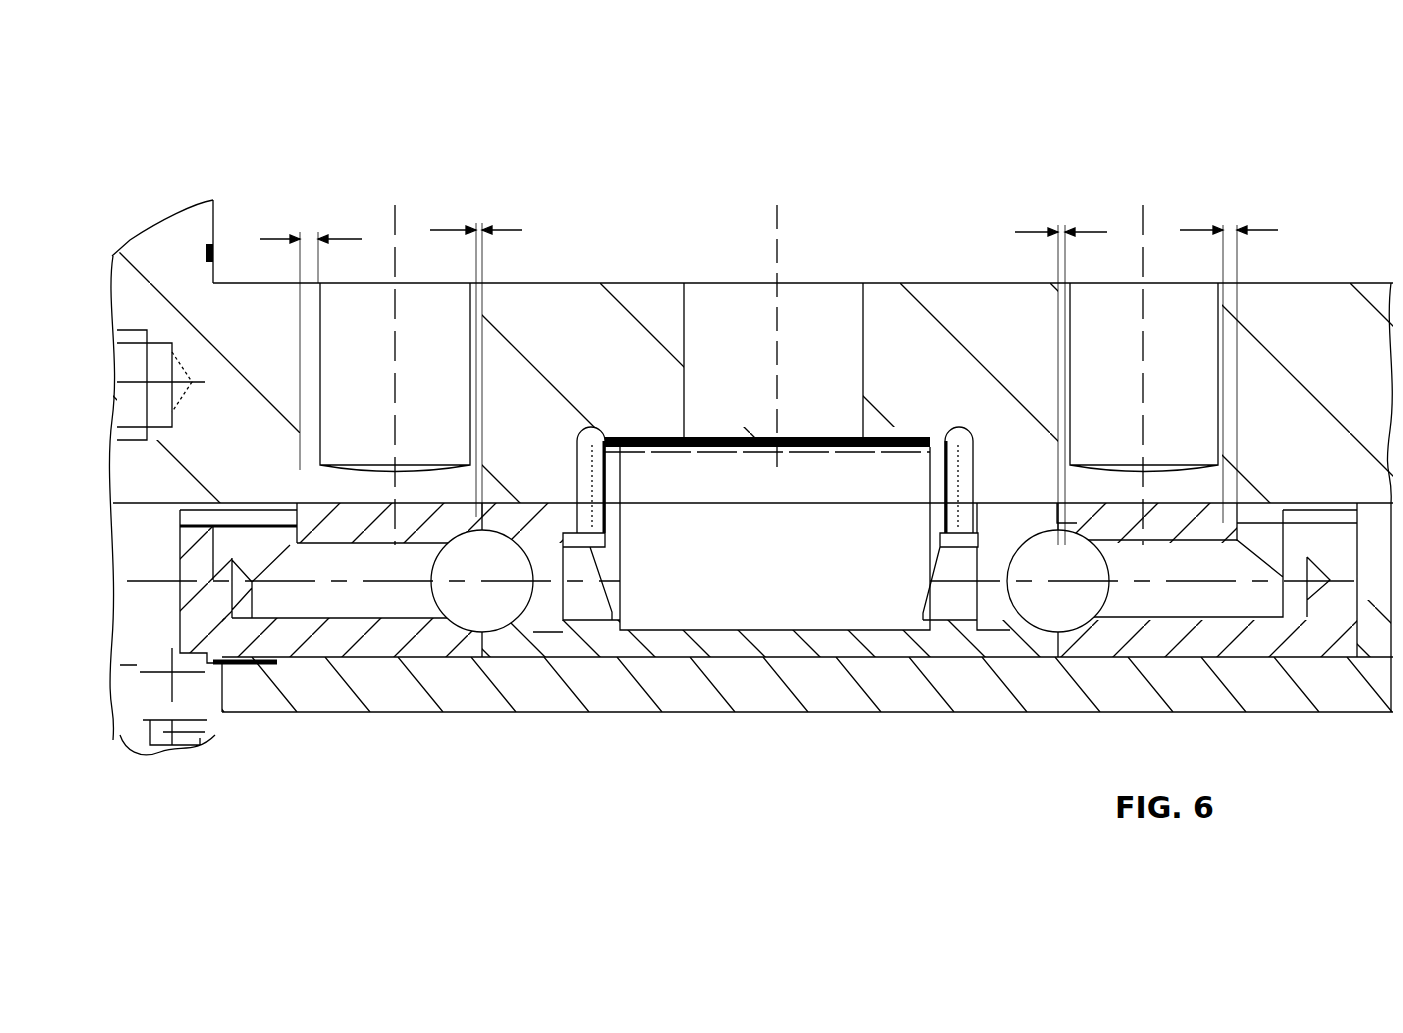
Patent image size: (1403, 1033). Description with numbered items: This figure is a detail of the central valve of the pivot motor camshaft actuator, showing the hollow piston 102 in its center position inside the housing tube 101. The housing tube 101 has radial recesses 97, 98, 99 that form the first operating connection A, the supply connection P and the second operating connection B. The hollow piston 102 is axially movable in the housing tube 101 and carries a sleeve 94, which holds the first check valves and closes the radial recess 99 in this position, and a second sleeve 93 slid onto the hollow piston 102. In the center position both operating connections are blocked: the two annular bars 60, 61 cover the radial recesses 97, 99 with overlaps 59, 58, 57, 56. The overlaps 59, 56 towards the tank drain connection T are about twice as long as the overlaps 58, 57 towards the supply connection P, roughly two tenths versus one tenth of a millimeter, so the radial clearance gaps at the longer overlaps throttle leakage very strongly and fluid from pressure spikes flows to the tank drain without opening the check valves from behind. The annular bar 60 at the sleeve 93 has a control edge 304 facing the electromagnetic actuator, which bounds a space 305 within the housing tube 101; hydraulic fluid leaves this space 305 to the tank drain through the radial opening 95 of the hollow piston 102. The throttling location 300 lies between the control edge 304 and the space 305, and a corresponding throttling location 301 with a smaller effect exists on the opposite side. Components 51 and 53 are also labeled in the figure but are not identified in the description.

The sleeve 93 is at (113, 256).
The throttling location 300 is at (272, 507).
The control edge 304 is at (297, 493).
The radial recess 97 is at (417, 317).
The overlap 59 is at (313, 338).
The overlap 58 is at (480, 359).
The annular bar 60 is at (453, 517).
The body 53 is at (704, 500).
The radial recess 98 is at (807, 310).
The support element 51 is at (893, 433).
The radial recess 99 is at (1112, 320).
The overlap 57 is at (1064, 373).
The annular bar 61 is at (1173, 523).
The throttling location 301 is at (1317, 513).
The overlap 56 is at (1230, 369).
The housing tube 101 is at (1317, 327).
The sleeve 94 is at (1342, 572).
The hollow piston 102 is at (908, 685).
The radial opening 95 is at (210, 697).
The space 305 is at (140, 632).